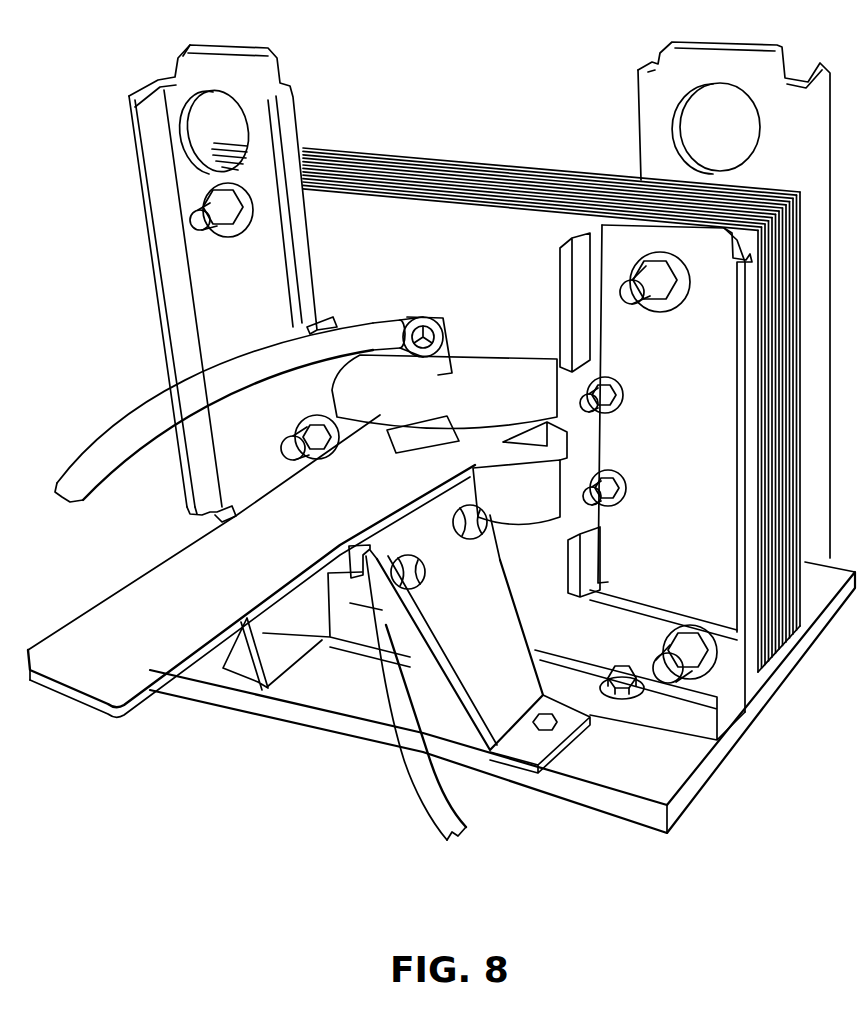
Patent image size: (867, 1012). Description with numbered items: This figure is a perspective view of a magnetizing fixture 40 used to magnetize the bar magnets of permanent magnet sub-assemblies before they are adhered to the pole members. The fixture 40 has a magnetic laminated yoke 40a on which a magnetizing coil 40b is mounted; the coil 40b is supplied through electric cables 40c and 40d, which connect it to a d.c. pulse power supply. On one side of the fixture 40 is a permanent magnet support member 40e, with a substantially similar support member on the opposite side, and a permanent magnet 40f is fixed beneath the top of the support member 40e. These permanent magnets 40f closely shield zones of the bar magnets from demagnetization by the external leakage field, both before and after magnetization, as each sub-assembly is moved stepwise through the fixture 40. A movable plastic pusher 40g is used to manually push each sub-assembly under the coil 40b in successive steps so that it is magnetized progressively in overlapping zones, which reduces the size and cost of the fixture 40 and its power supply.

The magnetizing fixture 40 is at (453, 110).
The magnetic laminated yoke 40a is at (366, 150).
The magnetizing coil 40b is at (498, 415).
The electric cable 40c is at (140, 416).
The electric cable 40d is at (400, 756).
The permanent magnet support member 40e is at (482, 622).
The permanent magnet 40f is at (347, 545).
The movable plastic pusher 40g is at (138, 580).